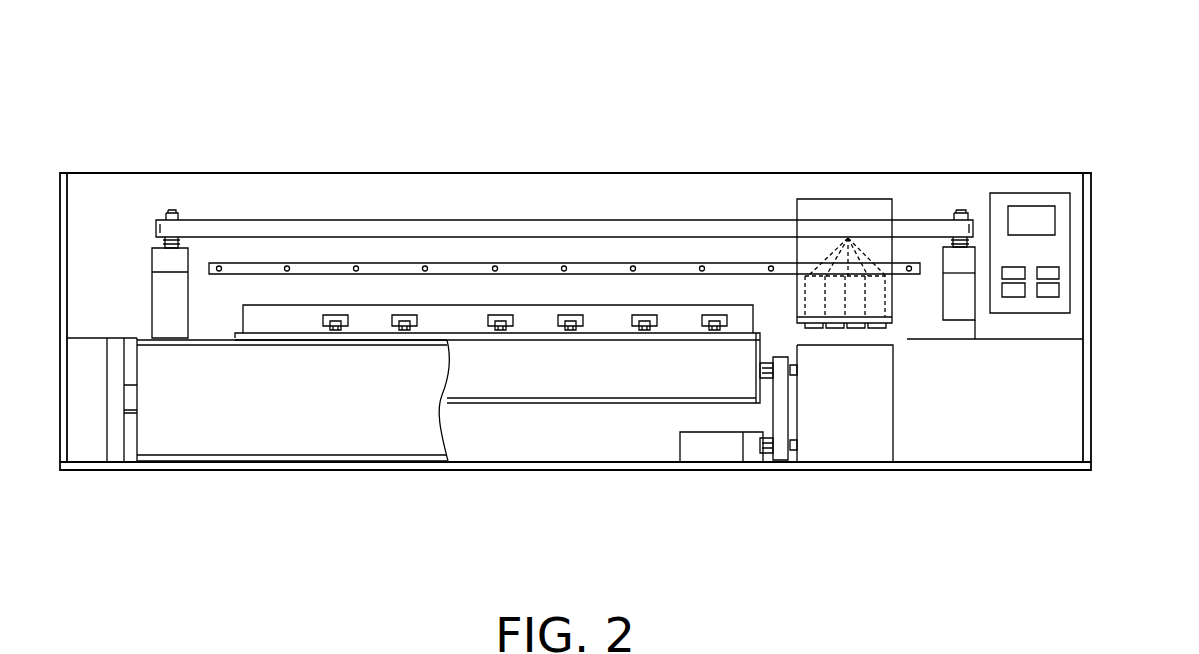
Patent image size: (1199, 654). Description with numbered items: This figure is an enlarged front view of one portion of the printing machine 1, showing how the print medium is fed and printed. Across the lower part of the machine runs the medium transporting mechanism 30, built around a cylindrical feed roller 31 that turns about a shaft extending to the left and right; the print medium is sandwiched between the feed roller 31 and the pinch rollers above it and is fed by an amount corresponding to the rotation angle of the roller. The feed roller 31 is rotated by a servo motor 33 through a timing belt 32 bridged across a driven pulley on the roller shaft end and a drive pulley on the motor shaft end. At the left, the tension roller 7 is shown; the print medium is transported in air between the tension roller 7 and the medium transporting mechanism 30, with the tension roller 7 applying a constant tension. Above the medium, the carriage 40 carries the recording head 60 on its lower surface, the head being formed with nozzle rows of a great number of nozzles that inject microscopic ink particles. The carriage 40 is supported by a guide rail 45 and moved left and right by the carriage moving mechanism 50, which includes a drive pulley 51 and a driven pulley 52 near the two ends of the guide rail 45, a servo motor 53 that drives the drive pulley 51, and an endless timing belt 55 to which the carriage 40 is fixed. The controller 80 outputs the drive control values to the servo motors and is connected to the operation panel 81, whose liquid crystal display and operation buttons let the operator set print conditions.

The printing machine 1 is at (672, 92).
The tension roller 7 is at (275, 430).
The medium transporting mechanism 30 is at (752, 481).
The feed roller 31 is at (592, 378).
The timing belt 32 is at (782, 410).
The servo motor 33 is at (712, 447).
The carriage 40 is at (838, 196).
The guide rail 45 is at (594, 268).
The carriage moving mechanism 50 is at (962, 197).
The drive pulley 51 is at (951, 214).
The driven pulley 52 is at (182, 218).
The servo motor 53 is at (950, 290).
The timing belt 55 is at (736, 230).
The recording head 60 is at (845, 263).
The controller 80 is at (1041, 191).
The operation panel 81 is at (1040, 246).